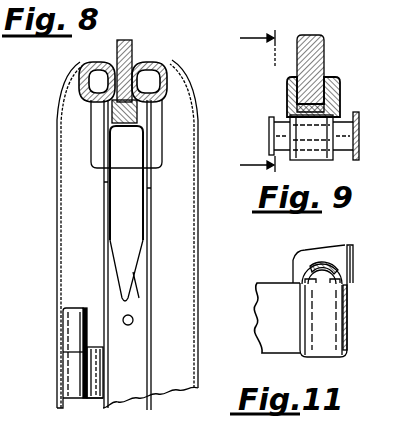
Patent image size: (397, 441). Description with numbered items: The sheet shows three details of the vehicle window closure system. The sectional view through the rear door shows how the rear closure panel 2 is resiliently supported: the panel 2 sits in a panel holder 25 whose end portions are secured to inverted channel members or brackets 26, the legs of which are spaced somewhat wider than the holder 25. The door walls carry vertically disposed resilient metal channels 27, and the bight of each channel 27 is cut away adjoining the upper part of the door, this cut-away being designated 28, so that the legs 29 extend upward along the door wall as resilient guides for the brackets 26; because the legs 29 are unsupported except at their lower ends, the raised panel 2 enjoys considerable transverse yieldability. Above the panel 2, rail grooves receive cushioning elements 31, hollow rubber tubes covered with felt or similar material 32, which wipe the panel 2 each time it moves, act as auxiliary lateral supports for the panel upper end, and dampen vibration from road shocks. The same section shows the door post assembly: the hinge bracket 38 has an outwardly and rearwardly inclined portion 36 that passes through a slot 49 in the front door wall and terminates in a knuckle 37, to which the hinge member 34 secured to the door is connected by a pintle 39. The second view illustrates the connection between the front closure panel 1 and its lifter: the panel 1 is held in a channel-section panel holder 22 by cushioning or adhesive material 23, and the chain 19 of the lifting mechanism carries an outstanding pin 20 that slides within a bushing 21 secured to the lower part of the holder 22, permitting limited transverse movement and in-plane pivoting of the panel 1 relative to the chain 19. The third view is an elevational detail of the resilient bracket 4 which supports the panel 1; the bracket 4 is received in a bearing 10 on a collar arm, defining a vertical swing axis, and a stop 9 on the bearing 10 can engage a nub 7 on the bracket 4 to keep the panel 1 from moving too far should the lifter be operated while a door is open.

In FIG. 9, the closure panel 1 is at (320, 62).
In FIG. 8, the closure panel 2 is at (130, 71).
In FIG. 11, the resilient bracket 4 is at (300, 264).
In FIG. 11, the nub 7 is at (302, 281).
In FIG. 11, the stop 9 is at (346, 293).
In FIG. 9, the bearing 10 is at (257, 97).
In FIG. 11, the bearing 10 is at (340, 349).
In FIG. 9, the chain 19 is at (360, 152).
In FIG. 9, the pin 20 is at (282, 120).
In FIG. 9, the bushing 21 is at (338, 118).
In FIG. 9, the panel holder 22 is at (340, 98).
In FIG. 9, the cushioning or adhesive material 23 is at (296, 74).
In FIG. 8, the panel holder 25 is at (148, 108).
In FIG. 8, the inverted channel member or bracket 26 is at (143, 190).
In FIG. 8, the metal channel 27 is at (152, 354).
In FIG. 8, the cut-away portion 28 is at (140, 296).
In FIG. 8, the leg 29 is at (146, 238).
In FIG. 8, the cushioning element 31 is at (170, 62).
In FIG. 8, the covering material 32 is at (176, 84).
In FIG. 8, the hinge member 34 is at (63, 330).
In FIG. 8, the inclined portion 36 is at (103, 372).
In FIG. 8, the knuckle 37 is at (65, 379).
In FIG. 8, the hinge bracket 38 is at (97, 400).
In FIG. 8, the pintle 39 is at (90, 290).
In FIG. 8, the slot 49 is at (97, 348).